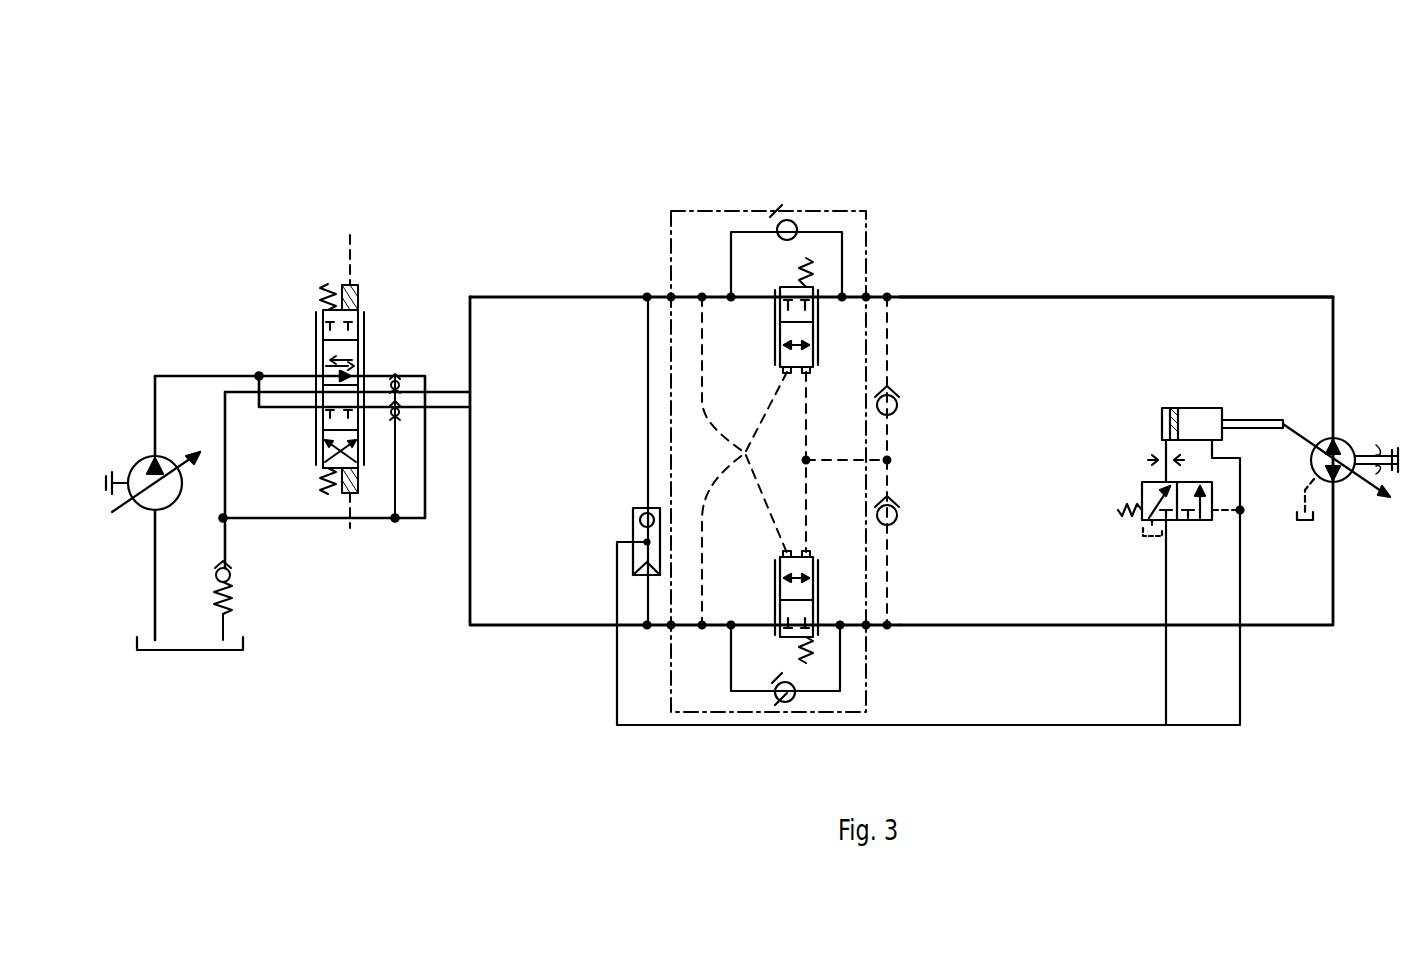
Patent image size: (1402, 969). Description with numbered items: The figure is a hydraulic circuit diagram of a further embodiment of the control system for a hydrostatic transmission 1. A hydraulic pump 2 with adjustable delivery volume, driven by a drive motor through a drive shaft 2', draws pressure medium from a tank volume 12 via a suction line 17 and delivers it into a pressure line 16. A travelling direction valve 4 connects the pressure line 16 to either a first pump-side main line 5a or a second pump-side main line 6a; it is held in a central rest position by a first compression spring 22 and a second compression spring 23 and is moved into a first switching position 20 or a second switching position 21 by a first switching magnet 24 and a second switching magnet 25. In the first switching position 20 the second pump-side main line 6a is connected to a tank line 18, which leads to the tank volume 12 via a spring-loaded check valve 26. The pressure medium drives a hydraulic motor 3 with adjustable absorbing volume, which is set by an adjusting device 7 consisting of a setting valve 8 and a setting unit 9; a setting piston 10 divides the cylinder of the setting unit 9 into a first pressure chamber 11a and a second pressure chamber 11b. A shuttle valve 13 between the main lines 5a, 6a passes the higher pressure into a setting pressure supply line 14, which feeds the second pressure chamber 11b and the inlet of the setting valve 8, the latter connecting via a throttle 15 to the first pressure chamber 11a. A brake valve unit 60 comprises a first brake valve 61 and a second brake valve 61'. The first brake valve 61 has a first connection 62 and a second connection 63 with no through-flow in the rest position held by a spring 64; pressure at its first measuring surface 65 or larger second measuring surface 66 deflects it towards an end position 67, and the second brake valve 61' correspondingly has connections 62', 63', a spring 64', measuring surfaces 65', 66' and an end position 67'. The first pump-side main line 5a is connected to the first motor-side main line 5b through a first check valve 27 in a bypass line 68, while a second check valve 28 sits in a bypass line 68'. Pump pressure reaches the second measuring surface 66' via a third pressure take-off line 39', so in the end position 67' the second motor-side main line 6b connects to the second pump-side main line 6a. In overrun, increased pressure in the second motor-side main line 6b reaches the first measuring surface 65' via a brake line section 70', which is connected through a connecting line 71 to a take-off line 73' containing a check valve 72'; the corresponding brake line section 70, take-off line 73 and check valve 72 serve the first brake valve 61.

The hydrostatic transmission 1 is at (503, 180).
The hydraulic pump 2 is at (158, 506).
The drive shaft 2' is at (117, 454).
The hydraulic motor 3 is at (1346, 442).
The travelling direction valve 4 is at (322, 398).
The first pump-side main line 5a is at (580, 297).
The first motor-side main line 5b is at (1100, 297).
The second pump-side main line 6a is at (515, 625).
The second motor-side main line 6b is at (1060, 625).
The adjusting device 7 is at (1255, 523).
The setting valve 8 is at (1130, 481).
The setting unit 9 is at (1189, 377).
The setting piston 10 is at (1170, 410).
The first pressure chamber 11a is at (1165, 422).
The second pressure chamber 11b is at (1196, 408).
The tank volume 12 is at (190, 655).
The shuttle valve 13 is at (633, 530).
The setting pressure supply line 14 is at (705, 725).
The throttle 15 is at (1158, 460).
The pressure line 16 is at (185, 376).
The suction line 17 is at (155, 570).
The tank line 18 is at (225, 428).
The first switching position 20 is at (325, 462).
The second switching position 21 is at (358, 346).
The first compression spring 22 is at (322, 482).
The second compression spring 23 is at (325, 296).
The first switching magnet 24 is at (358, 488).
The second switching magnet 25 is at (360, 300).
The spring-loaded check valve 26 is at (234, 594).
The first check valve 27 is at (790, 220).
The second check valve 28 is at (787, 703).
The third pressure take-off line 39' is at (695, 424).
The brake valve unit 60 is at (866, 216).
The first brake valve 61 is at (839, 328).
The second brake valve 61' is at (839, 602).
The first connection 62 is at (776, 312).
The first connection 62' is at (771, 597).
The second connection 63 is at (872, 265).
The second connection 63' is at (874, 670).
The spring 64 is at (820, 227).
The spring 64' is at (823, 701).
The first measuring surface 65 is at (827, 459).
The first measuring surface 65' is at (830, 537).
The second measuring surface 66 is at (745, 498).
The second measuring surface 66' is at (764, 537).
The end position 67 is at (839, 358).
The end position 67' is at (840, 576).
The bypass line 68 is at (761, 266).
The bypass line 68' is at (760, 661).
The brake line section 70 is at (767, 428).
The brake line section 70' is at (753, 471).
The connecting line 71 is at (852, 462).
The check valve 72 is at (908, 414).
The check valve 72' is at (912, 506).
The take-off line 73 is at (913, 377).
The take-off line 73' is at (917, 544).